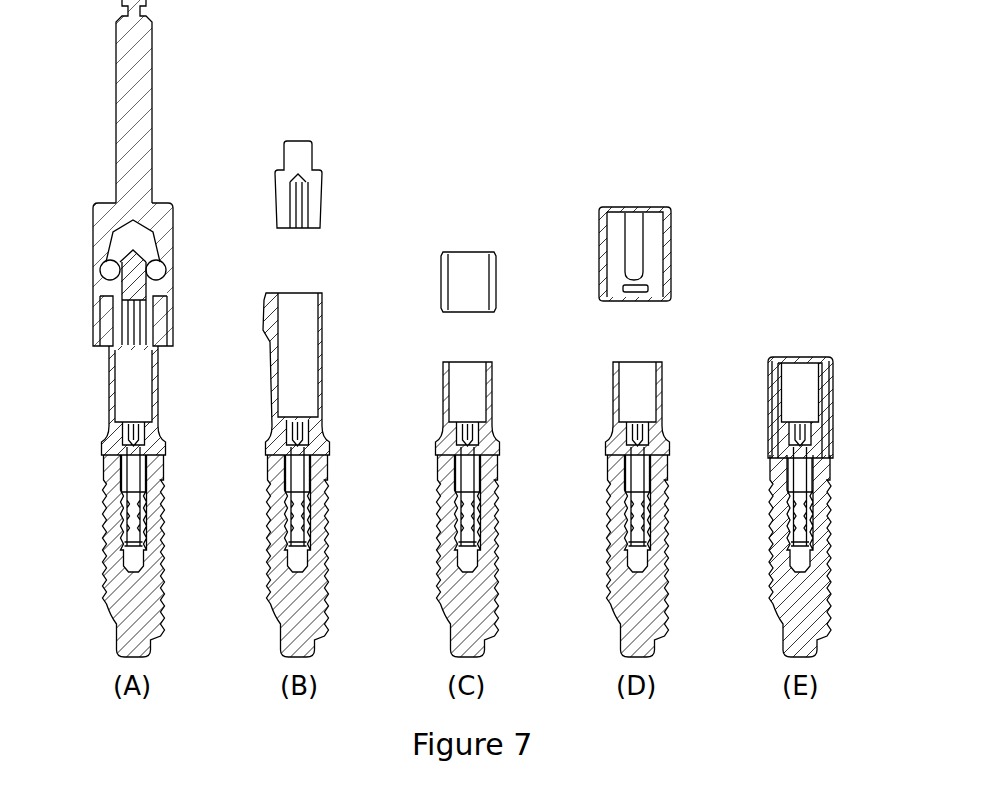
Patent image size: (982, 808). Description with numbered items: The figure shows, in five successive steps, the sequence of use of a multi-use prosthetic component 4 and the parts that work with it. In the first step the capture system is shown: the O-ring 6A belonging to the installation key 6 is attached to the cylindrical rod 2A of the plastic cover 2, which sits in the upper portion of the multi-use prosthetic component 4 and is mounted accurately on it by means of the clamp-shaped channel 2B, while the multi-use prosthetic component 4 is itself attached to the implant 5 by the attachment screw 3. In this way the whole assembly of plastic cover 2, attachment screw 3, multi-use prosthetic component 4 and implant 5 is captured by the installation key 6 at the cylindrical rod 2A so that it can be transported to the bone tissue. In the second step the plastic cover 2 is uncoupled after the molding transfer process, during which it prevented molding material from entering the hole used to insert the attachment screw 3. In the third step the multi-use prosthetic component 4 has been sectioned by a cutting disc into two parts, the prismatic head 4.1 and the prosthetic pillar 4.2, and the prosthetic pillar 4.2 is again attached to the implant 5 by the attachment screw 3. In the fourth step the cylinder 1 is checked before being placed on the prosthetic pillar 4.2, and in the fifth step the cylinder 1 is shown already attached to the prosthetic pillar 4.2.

The cylinder 1 is at (781, 345).
The plastic cover 2 is at (330, 160).
The cylindrical rod 2A is at (130, 267).
The clamp-shaped channel 2B is at (148, 330).
The attachment screw 3 is at (297, 469).
The multi-use prosthetic component 4 is at (103, 402).
The prismatic head 4.1 is at (433, 268).
The prosthetic pillar 4.2 is at (437, 395).
The implant 5 is at (103, 532).
The installation key 6 is at (139, 53).
The O-ring 6A is at (155, 269).